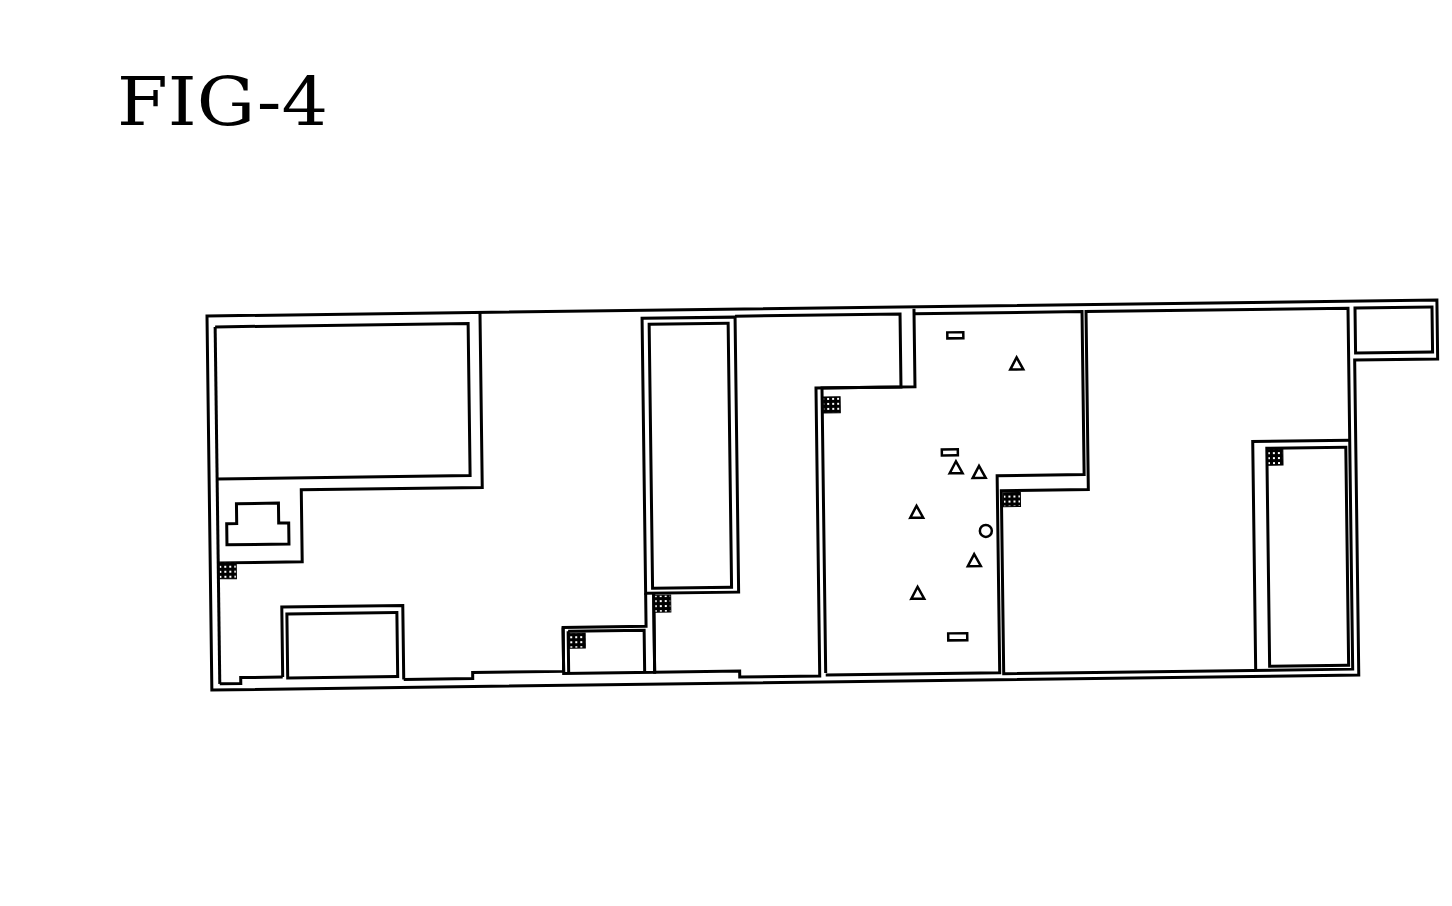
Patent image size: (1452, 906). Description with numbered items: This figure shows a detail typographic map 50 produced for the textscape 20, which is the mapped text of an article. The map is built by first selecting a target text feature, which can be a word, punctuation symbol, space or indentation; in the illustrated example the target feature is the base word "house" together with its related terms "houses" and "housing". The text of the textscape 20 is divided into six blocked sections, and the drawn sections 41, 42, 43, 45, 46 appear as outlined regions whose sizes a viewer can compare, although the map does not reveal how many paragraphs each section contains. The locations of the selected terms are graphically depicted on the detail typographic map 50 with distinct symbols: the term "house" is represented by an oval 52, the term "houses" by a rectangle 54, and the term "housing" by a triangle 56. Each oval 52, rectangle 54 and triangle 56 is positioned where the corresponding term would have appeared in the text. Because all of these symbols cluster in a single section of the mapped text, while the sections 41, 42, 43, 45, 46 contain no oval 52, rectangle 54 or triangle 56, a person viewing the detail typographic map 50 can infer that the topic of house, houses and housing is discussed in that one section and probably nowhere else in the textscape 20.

The textscape 20 is at (294, 300).
The detail typographic map 50 is at (876, 120).
The first section 41 is at (431, 672).
The second section 42 is at (689, 335).
The third section 43 is at (800, 335).
The fifth section 45 is at (1200, 650).
The sixth section 46 is at (1305, 648).
The oval 52 is at (989, 537).
The rectangle 54 is at (950, 447).
The triangle 56 is at (958, 465).